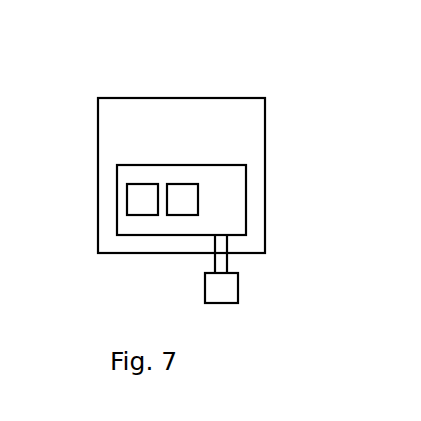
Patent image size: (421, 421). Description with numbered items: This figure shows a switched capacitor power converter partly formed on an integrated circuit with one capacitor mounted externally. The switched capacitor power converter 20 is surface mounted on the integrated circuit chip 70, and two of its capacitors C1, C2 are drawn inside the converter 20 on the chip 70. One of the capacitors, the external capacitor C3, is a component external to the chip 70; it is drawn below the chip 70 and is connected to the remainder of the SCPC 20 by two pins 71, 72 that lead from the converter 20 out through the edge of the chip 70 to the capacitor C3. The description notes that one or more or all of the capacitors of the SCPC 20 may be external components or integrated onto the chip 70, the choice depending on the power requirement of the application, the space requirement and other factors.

The integrated circuit chip 70 is at (138, 117).
The switched capacitor power converter 20 is at (117, 193).
The capacitor C1 is at (145, 212).
The capacitor C2 is at (185, 210).
The pin 71 is at (212, 241).
The pin 72 is at (228, 242).
The external capacitor C3 is at (222, 285).